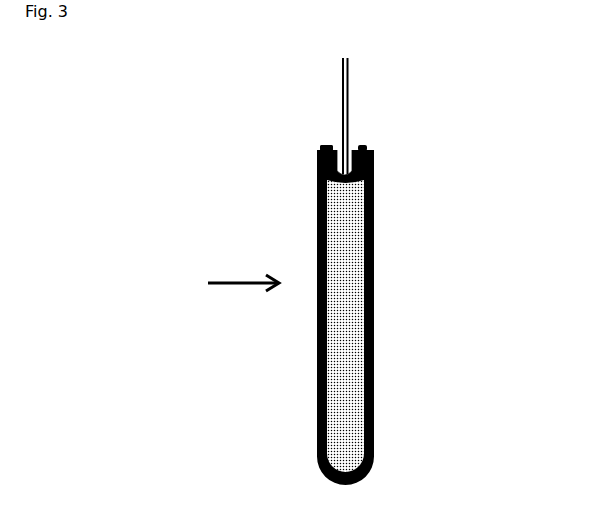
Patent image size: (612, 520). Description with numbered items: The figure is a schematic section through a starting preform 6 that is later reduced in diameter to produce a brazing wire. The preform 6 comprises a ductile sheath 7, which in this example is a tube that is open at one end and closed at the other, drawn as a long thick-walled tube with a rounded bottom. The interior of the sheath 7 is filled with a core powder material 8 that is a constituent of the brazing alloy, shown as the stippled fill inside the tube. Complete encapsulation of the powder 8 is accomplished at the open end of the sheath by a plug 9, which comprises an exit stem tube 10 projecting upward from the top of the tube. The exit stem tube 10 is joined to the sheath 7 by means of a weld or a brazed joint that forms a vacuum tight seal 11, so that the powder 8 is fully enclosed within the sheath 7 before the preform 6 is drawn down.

The starting preform 6 is at (232, 284).
The ductile sheath 7 is at (375, 252).
The core powder material 8 is at (341, 237).
The plug 9 is at (333, 144).
The exit stem tube 10 is at (351, 111).
The vacuum tight seal 11 is at (324, 144).